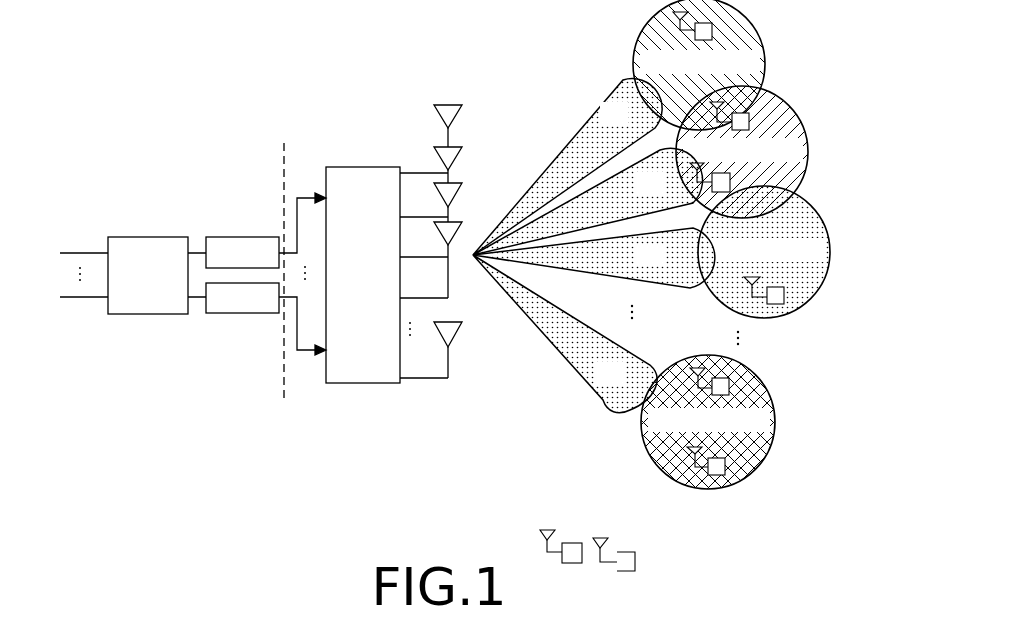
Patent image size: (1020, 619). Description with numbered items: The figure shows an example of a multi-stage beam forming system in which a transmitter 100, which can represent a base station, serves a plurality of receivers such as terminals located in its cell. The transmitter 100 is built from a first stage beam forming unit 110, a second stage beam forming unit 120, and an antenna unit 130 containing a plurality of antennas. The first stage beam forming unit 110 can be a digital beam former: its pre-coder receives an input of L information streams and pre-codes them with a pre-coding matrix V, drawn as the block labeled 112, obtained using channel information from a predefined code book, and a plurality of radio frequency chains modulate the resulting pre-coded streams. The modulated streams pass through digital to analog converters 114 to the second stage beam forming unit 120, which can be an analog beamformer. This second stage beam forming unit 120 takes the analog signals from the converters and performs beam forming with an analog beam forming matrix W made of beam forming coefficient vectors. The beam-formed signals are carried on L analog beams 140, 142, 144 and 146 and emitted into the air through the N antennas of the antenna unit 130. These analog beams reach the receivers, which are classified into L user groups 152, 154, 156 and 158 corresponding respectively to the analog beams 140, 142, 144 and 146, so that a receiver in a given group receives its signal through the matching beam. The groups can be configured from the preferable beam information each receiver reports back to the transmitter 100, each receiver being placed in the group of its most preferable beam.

The transmitter 100 is at (465, 438).
The first stage beam forming unit 110 is at (279, 222).
The digital precoder V 112 is at (150, 314).
The digital to analog converters (DACs) 114 is at (242, 313).
The second stage beam forming unit 120 is at (285, 131).
The antenna unit 130 is at (448, 102).
The analog beam 140 is at (604, 102).
The analog beam 142 is at (560, 153).
The analog beam 144 is at (683, 291).
The analog beam 146 is at (620, 416).
The user group 152 is at (766, 33).
The user group 154 is at (811, 150).
The user group 156 is at (831, 250).
The user group 158 is at (776, 420).